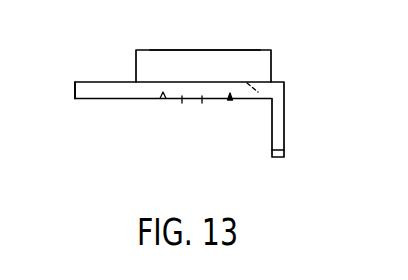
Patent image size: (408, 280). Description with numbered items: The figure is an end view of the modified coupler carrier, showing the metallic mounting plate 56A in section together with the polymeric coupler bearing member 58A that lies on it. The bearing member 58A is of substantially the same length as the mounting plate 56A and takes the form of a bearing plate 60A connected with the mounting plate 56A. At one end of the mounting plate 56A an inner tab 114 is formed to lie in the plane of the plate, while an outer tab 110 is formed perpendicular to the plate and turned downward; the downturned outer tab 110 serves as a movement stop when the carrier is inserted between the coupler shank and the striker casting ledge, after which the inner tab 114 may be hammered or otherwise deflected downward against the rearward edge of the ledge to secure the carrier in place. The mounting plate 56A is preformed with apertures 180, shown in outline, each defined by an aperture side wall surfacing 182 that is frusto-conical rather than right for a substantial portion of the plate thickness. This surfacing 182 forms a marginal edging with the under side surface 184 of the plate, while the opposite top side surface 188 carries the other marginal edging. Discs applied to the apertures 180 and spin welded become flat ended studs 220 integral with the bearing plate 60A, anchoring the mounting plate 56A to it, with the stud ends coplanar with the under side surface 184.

The mounting plate 56A is at (148, 92).
The polymeric coupler bearing member 58A is at (264, 58).
The bearing plate 60A is at (211, 63).
The inner tab 114 is at (90, 91).
The top side surface 188 is at (254, 81).
The aperture side wall surfacing 182 is at (169, 100).
The under side surface 184 is at (182, 100).
The stud 220 is at (202, 100).
The aperture 180 is at (230, 103).
The outer tab 110 is at (278, 143).